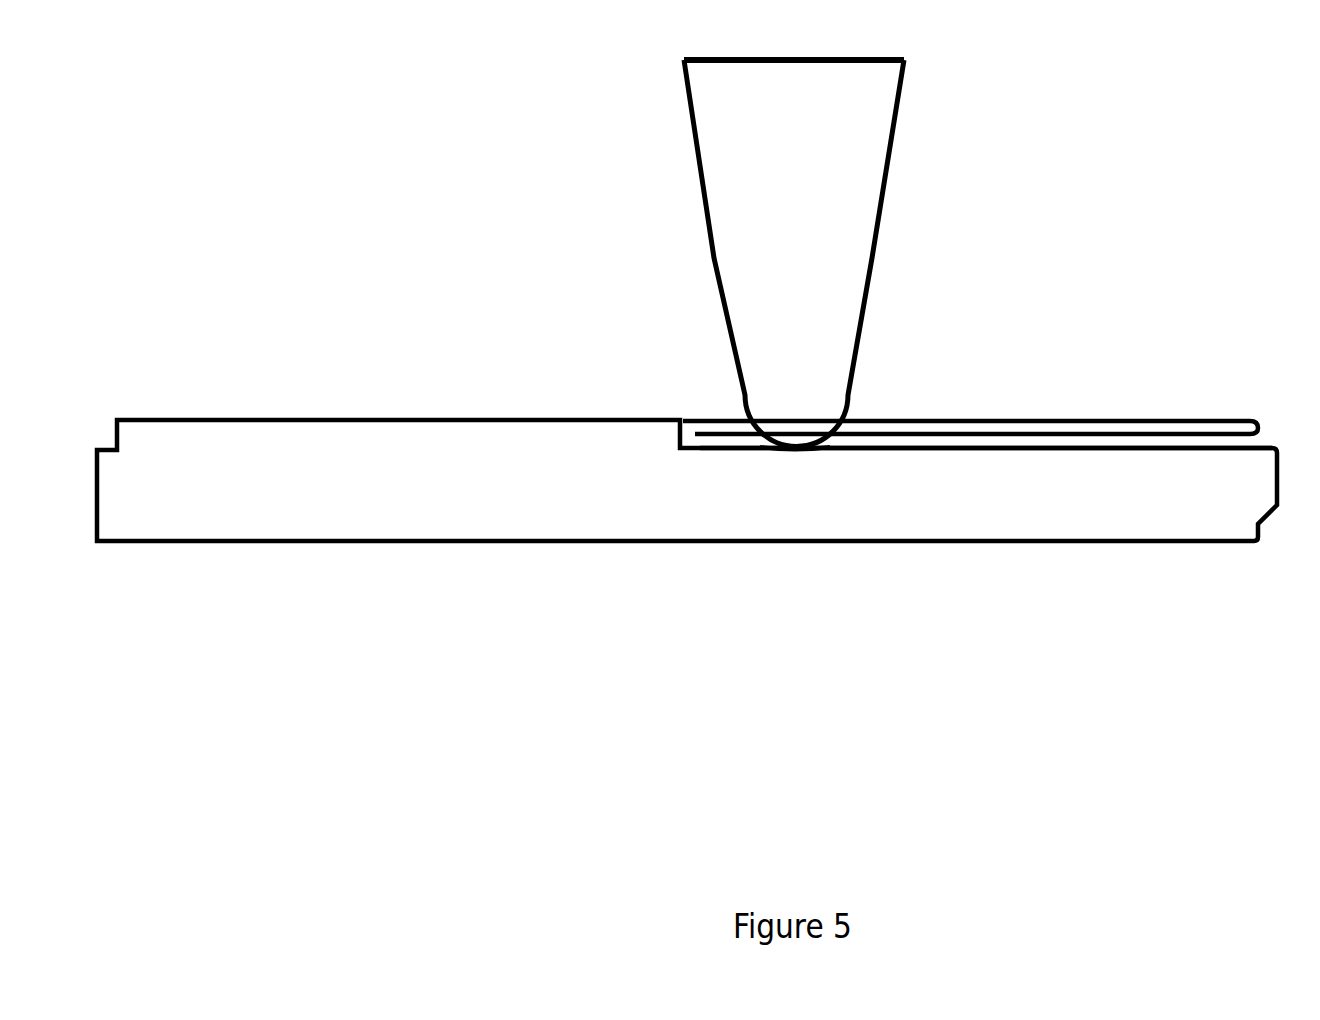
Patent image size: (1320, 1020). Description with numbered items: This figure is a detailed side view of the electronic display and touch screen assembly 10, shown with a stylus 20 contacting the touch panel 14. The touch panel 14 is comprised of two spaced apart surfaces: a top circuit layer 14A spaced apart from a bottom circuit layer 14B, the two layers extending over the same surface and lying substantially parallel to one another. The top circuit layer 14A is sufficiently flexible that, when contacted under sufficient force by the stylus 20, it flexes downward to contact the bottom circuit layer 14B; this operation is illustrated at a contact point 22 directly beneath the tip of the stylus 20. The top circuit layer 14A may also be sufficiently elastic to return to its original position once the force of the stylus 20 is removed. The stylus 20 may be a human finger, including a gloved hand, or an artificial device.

The electronic display and touch screen assembly 10 is at (350, 268).
The touch panel 14 is at (436, 520).
The top circuit layer 14A is at (1177, 417).
The bottom circuit layer 14B is at (1020, 452).
The stylus 20 is at (860, 330).
The contact point 22 is at (787, 455).